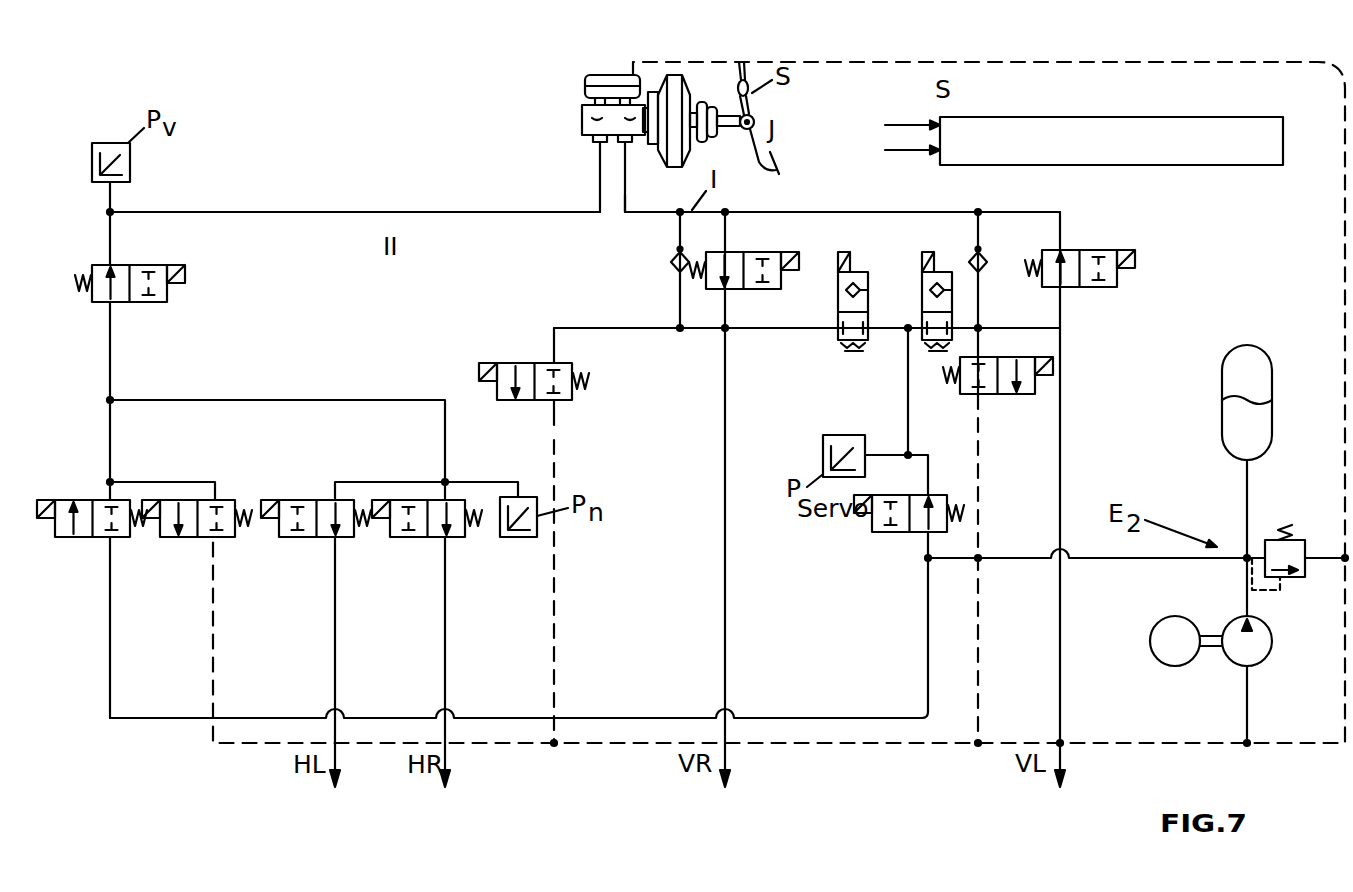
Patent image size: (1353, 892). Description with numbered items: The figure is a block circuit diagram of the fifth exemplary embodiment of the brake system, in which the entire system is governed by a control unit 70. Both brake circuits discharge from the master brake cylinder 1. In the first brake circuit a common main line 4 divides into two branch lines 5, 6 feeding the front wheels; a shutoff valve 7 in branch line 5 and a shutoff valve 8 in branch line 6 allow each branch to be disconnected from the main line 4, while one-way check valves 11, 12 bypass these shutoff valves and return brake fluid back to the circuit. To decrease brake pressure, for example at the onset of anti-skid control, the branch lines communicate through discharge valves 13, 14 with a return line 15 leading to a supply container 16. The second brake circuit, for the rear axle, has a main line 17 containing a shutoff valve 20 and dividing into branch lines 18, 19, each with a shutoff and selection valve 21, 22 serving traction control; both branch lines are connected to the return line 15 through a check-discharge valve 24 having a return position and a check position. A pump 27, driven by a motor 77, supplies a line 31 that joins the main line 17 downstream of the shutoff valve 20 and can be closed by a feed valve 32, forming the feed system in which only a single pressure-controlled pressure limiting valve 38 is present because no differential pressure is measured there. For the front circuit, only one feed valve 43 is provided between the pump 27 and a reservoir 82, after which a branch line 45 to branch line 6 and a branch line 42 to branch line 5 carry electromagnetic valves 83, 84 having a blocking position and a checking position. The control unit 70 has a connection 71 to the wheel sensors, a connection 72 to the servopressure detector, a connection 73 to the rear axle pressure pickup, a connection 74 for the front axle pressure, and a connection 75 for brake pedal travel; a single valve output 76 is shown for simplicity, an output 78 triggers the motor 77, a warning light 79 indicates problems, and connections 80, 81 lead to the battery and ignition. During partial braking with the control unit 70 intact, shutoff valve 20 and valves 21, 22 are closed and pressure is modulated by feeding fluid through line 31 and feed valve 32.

The master brake cylinder 1 is at (578, 122).
The main line 4 is at (632, 212).
The branch line 5 is at (1062, 482).
The branch line 6 is at (728, 432).
The shutoff valve 7 is at (1082, 286).
The shutoff valve 8 is at (765, 289).
The one-way check valve 11 is at (982, 258).
The one-way check valve 12 is at (674, 254).
The discharge valve 13 is at (1012, 395).
The discharge valve 14 is at (562, 400).
The return line 15 is at (1345, 232).
The supply container 16 is at (584, 92).
The main line 17 is at (316, 208).
The branch line 18 is at (447, 661).
The branch line 19 is at (337, 661).
The shutoff valve 20 is at (168, 275).
The shutoff and selection valve 21 is at (466, 537).
The shutoff and selection valve 22 is at (352, 537).
The check-discharge valve 24 is at (222, 537).
The pump 27 is at (1268, 655).
The line 31 is at (790, 715).
The feed valve 32 is at (113, 537).
The pressure limiting valve 38 is at (1305, 576).
The branch line 42 is at (1033, 328).
The feed valve 43 is at (930, 494).
The branch line 45 is at (803, 330).
The control unit 70 is at (1203, 165).
The connection to the wheel sensors 71 is at (1140, 117).
The connection to a servopressure detector 72 is at (1100, 117).
The connection to a pressure detector pickup 73 is at (1060, 117).
The connection for detection of the front axle pressure 74 is at (1015, 117).
The connection for detection of the brake pedal travel 75 is at (962, 117).
The output 76 is at (985, 165).
The motor 77 is at (1161, 617).
The output 78 is at (1062, 165).
The warning light 79 is at (1132, 165).
The connection to the battery 80 is at (902, 153).
The connection to the ignition 81 is at (898, 124).
The reservoir 82 is at (1240, 430).
The electromagnetic valve 83 is at (858, 268).
The electromagnetic valve 84 is at (953, 300).